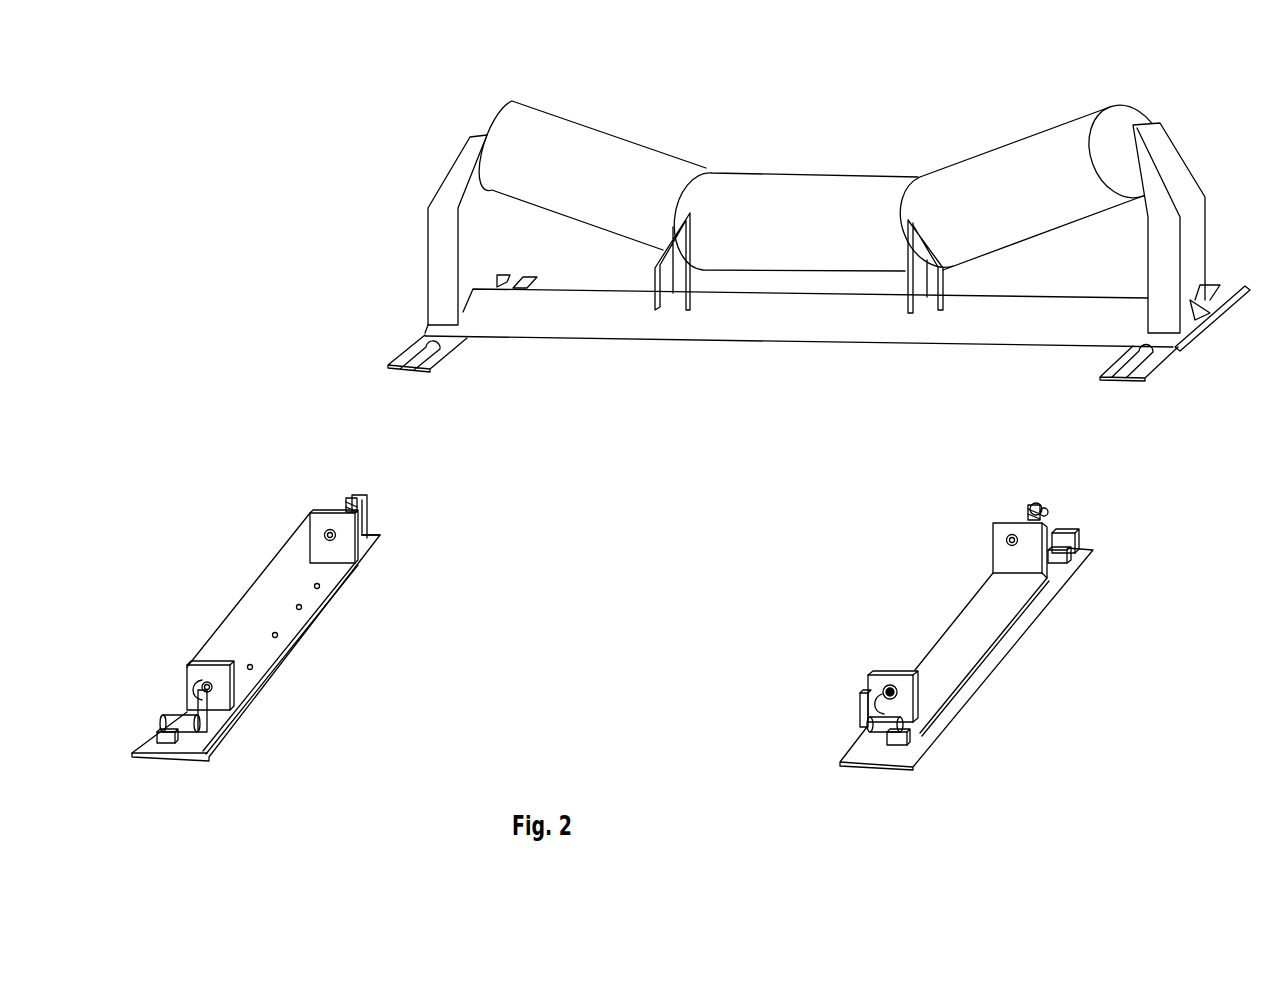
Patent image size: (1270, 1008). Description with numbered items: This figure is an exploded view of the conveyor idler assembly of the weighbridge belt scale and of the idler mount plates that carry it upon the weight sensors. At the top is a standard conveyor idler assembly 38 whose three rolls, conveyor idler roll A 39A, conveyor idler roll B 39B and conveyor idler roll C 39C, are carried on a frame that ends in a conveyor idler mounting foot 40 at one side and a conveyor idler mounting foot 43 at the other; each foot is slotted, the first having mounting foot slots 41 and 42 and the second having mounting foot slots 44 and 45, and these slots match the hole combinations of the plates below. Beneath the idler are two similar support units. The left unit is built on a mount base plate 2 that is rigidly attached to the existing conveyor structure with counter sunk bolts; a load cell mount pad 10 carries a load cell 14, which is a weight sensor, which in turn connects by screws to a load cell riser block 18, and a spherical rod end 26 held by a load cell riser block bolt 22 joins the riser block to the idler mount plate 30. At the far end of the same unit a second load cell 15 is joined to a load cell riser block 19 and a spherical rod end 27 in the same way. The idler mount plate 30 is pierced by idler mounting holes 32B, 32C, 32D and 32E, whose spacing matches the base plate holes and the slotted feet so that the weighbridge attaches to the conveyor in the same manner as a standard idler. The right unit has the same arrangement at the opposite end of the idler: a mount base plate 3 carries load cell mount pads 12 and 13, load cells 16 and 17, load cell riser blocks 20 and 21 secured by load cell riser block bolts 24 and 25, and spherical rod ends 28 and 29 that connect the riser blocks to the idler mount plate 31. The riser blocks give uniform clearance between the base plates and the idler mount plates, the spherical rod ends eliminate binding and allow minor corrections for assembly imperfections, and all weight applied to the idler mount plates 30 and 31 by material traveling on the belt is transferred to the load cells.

The mount base plate 2 is at (195, 743).
The mount base plate 3 is at (873, 748).
The load cell mount pad 10 is at (163, 737).
The load cell mount pad 12 is at (895, 748).
The load cell mount pad 13 is at (1080, 547).
The load cell 14 is at (163, 722).
The load cell 15 is at (370, 532).
The load cell 16 is at (903, 730).
The load cell 17 is at (1065, 535).
The load cell riser block 18 is at (198, 703).
The load cell riser block 19 is at (350, 500).
The load cell riser block 20 is at (863, 713).
The load cell riser block 21 is at (1025, 510).
The load cell riser block bolt 22 is at (185, 694).
The load cell riser block bolt 24 is at (890, 698).
The load cell riser block bolt 25 is at (1043, 510).
The spherical rod end 26 is at (192, 693).
The spherical rod end 27 is at (350, 495).
The spherical rod end 28 is at (885, 712).
The spherical rod end 29 is at (1037, 505).
The idler mount plate 30 is at (263, 603).
The idler mount plate 31 is at (977, 622).
The idler mounting hole 32B is at (253, 668).
The idler mounting hole 32C is at (278, 636).
The idler mounting hole 32D is at (302, 608).
The idler mounting hole 32E is at (320, 586).
The conveyor idler assembly 38 is at (443, 265).
The conveyor idler roll A 39A is at (568, 155).
The conveyor idler roll B 39B is at (820, 205).
The conveyor idler roll C 39C is at (1026, 178).
The conveyor idler mounting foot 40 is at (450, 350).
The conveyor idler mounting foot slot 41 is at (421, 338).
The conveyor idler mounting foot slot 42 is at (513, 283).
The conveyor idler mounting foot 43 is at (1133, 348).
The conveyor idler mounting foot slot 44 is at (1133, 373).
The conveyor idler mounting foot slot 45 is at (1213, 287).